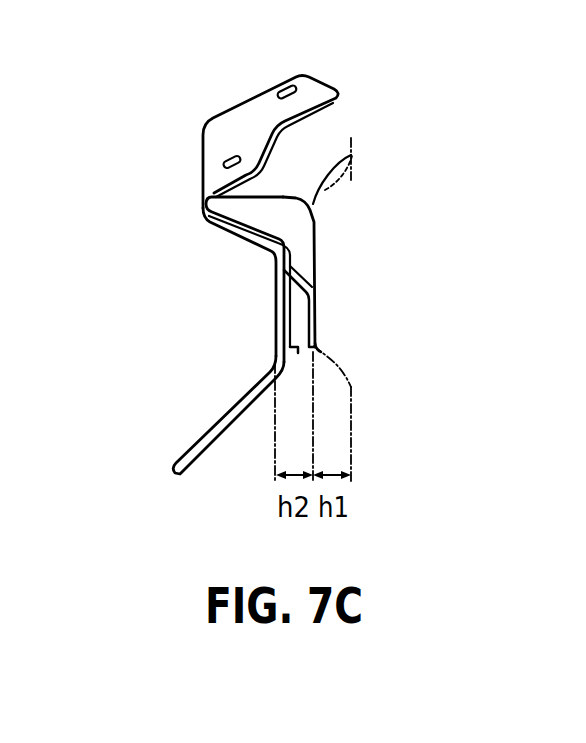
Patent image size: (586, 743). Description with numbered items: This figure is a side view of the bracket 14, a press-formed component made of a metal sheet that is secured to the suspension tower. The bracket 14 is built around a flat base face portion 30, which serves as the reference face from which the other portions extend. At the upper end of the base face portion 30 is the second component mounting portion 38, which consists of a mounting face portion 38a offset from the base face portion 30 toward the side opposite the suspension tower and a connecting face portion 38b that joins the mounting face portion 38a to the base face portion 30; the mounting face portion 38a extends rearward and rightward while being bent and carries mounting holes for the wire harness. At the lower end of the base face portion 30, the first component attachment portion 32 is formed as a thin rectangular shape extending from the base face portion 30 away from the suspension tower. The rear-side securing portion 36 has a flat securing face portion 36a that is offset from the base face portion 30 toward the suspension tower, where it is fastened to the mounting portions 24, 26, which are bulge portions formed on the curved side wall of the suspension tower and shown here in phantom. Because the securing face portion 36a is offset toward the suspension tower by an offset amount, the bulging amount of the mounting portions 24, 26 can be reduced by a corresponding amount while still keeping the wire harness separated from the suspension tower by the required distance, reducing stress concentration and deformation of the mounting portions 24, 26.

The bracket 14 is at (153, 157).
The second component mounting portion 38 is at (236, 95).
The mounting face portion 38a is at (222, 126).
The connecting face portion 38b is at (231, 236).
The base face portion 30 is at (280, 318).
The securing face portion 36a is at (205, 357).
The rear-side securing portion 36 is at (308, 323).
The first component attachment portion 32 is at (193, 445).
The front-side mounting portion 24 is at (399, 305).
The rear-side mounting portion 26 is at (353, 154).